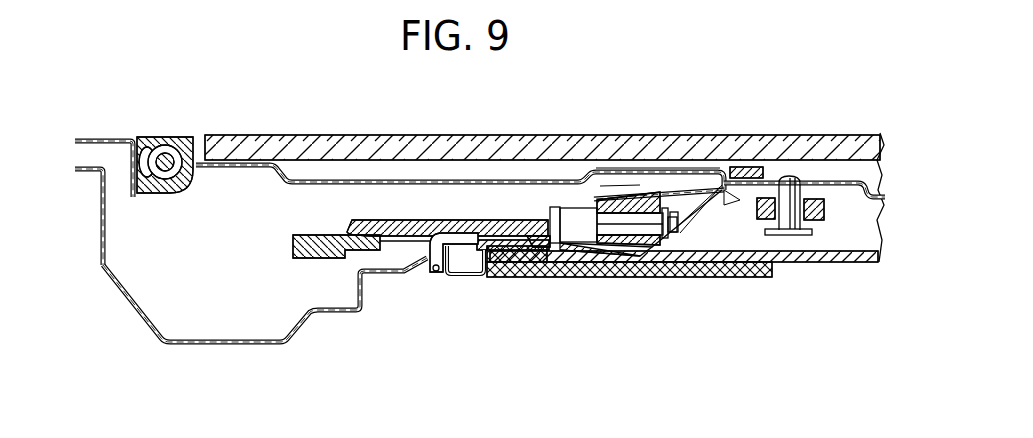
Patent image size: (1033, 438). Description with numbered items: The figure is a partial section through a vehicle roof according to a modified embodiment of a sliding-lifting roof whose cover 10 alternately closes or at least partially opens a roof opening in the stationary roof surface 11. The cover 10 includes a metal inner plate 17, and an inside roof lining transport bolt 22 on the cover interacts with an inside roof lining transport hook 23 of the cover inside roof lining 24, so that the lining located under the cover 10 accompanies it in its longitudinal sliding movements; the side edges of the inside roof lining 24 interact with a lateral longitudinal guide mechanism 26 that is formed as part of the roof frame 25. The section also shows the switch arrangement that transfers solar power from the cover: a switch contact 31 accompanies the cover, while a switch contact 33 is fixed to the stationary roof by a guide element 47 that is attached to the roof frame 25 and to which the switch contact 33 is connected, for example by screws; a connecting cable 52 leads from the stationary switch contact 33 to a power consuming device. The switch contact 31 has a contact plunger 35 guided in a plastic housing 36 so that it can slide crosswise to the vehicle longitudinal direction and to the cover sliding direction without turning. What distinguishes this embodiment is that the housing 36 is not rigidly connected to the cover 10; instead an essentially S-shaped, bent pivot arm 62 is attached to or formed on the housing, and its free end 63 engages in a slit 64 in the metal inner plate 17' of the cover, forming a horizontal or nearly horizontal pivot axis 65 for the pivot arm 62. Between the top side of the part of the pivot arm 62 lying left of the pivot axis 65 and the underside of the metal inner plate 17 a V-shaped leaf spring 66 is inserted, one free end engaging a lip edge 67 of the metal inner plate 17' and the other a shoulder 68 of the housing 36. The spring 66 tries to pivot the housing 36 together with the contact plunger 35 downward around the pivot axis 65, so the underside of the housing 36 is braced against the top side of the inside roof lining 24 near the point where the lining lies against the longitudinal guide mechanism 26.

The cover 10 is at (308, 146).
The stationary roof surface 11 is at (103, 138).
The metal inner plate 17 is at (460, 135).
The metal inner plate 17' is at (804, 142).
The inside roof lining transport bolt 22 is at (797, 178).
The inside roof lining transport hook 23 is at (816, 221).
The cover inside roof lining 24 is at (620, 283).
The roof frame 25 is at (256, 340).
The longitudinal guide mechanism 26 is at (483, 264).
The switch contact 31 is at (648, 278).
The switch contact 33 is at (502, 212).
The contact plunger 35 is at (558, 206).
The housing 36 is at (638, 183).
The guide element 47 is at (330, 240).
The connecting cable 52 is at (433, 263).
The pivot arm 62 is at (703, 192).
The free end 63 is at (750, 170).
The slit 64 is at (730, 196).
The pivot axis 65 is at (725, 185).
The V-shaped leaf spring 66 is at (681, 167).
The lip edge 67 is at (590, 168).
The shoulder 68 is at (590, 192).